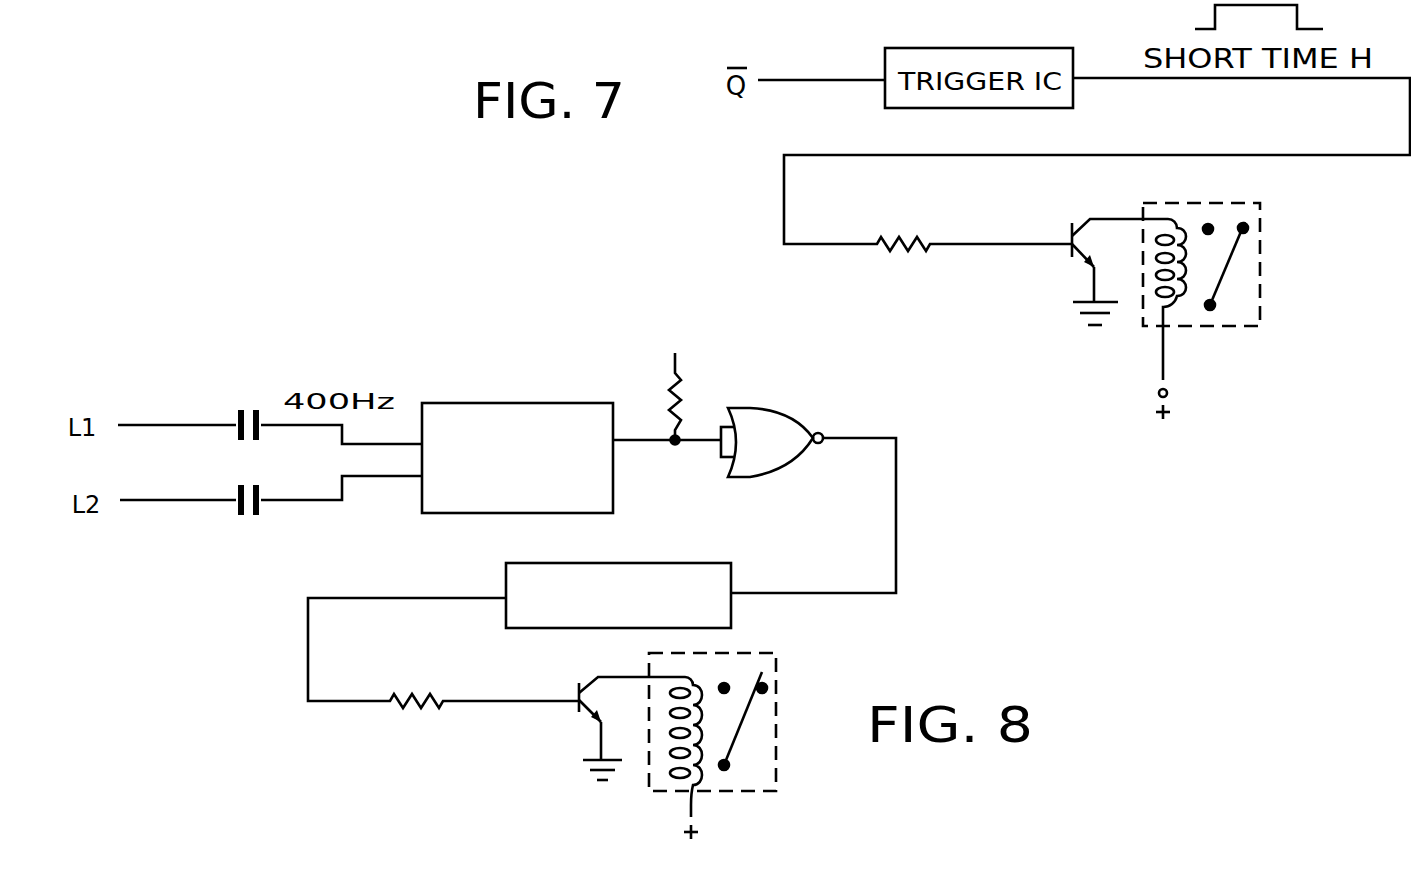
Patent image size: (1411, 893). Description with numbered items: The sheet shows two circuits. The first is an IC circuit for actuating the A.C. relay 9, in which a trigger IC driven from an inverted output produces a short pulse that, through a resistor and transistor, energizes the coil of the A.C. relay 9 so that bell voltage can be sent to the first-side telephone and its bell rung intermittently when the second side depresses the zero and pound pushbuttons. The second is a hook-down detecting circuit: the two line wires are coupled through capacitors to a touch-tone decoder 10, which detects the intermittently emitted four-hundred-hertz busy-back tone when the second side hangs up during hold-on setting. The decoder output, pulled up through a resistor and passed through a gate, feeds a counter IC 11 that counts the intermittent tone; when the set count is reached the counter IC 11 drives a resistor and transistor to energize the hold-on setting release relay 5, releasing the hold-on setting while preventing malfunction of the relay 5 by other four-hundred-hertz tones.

In FIG. 8, the hold-on setting release relay 5 is at (780, 686).
In FIG. 7, the A.C. relay 9 is at (1268, 283).
In FIG. 8, the touch-tone decoder 10 is at (537, 412).
In FIG. 8, the counter IC 11 is at (667, 573).